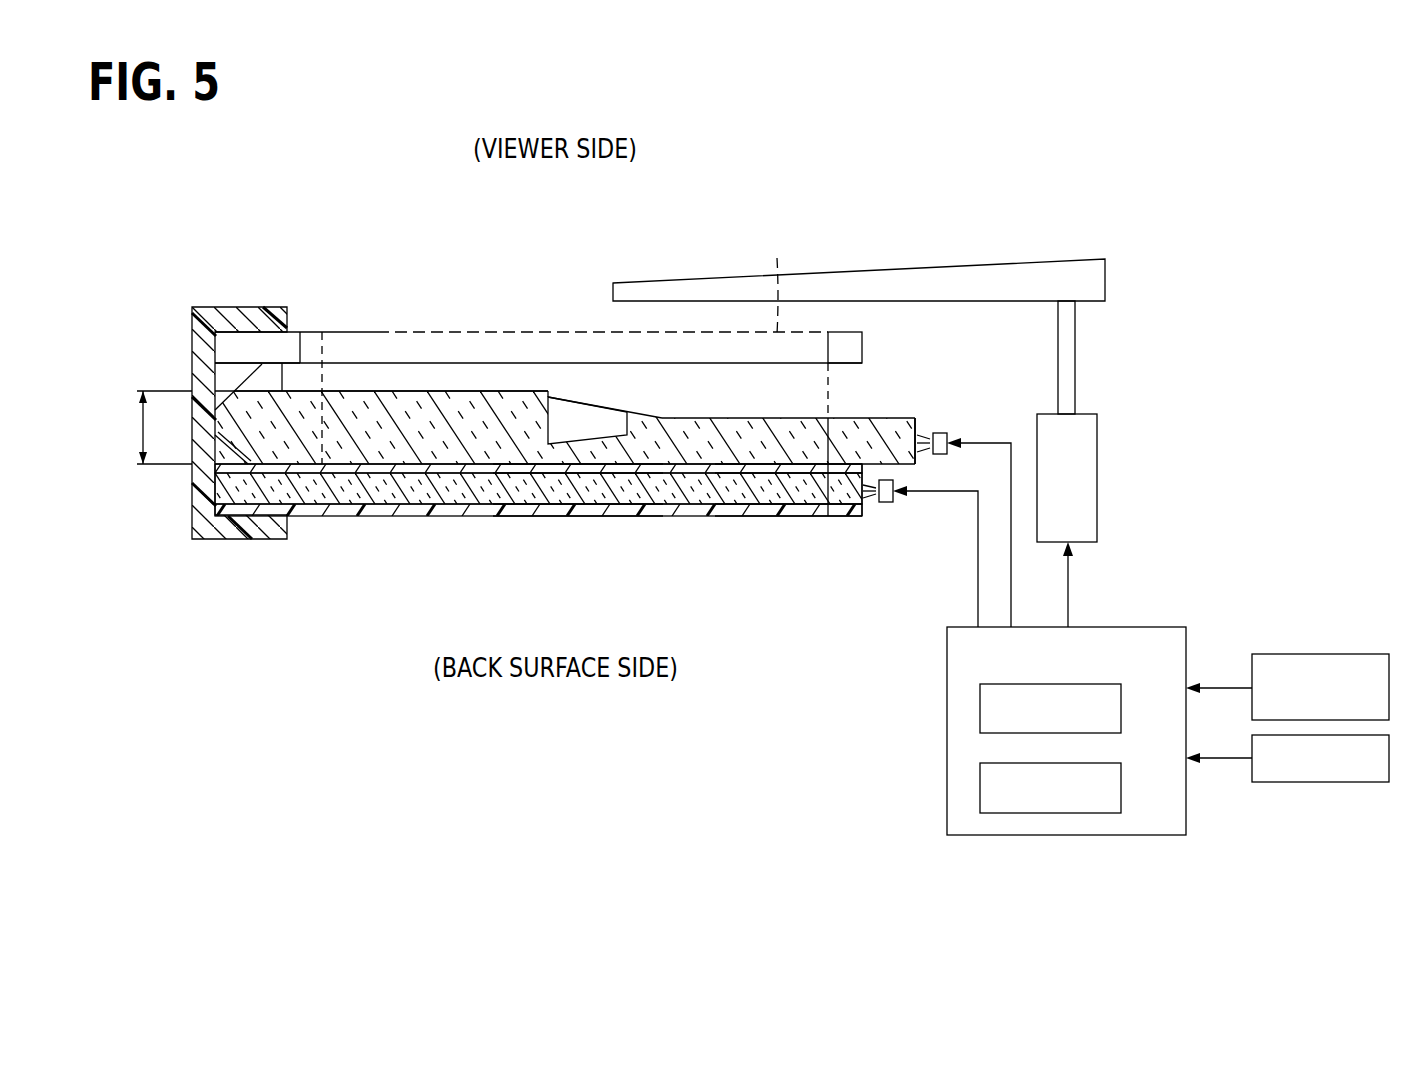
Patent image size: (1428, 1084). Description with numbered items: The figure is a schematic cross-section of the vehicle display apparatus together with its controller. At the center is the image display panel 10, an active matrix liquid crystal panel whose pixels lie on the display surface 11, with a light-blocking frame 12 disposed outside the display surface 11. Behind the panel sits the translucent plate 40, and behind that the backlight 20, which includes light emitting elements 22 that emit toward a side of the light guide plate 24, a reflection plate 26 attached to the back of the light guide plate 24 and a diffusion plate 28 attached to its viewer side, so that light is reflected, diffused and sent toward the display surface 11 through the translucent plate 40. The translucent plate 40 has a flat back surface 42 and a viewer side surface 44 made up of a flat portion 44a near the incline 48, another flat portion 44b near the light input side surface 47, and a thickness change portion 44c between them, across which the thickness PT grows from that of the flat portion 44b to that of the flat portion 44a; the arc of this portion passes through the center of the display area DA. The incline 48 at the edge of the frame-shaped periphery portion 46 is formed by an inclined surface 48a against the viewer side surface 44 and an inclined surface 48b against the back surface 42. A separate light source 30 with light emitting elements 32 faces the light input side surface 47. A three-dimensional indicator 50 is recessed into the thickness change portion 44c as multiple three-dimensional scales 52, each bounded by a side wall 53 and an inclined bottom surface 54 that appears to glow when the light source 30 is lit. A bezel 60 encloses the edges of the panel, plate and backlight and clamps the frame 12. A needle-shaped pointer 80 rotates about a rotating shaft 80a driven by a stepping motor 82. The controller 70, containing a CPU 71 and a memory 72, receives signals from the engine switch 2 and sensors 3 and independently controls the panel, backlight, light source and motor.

The engine switch 2 is at (1389, 688).
The sensors 3 is at (1389, 758).
The image display panel 10 is at (862, 350).
The display surface 11 is at (316, 330).
The frame 12 is at (262, 330).
The backlight 20 is at (808, 541).
The light emitting elements 22 is at (885, 503).
The light guide plate 24 is at (777, 505).
The reflection plate 26 is at (737, 517).
The diffusion plate 28 is at (715, 572).
The light source 30 is at (940, 431).
The light emitting elements 32 is at (975, 506).
The translucent plate 40 is at (565, 337).
The back surface 42 is at (538, 521).
The viewer side surface 44 is at (574, 337).
The flat portion 44a is at (457, 391).
The another flat portion 44b is at (692, 418).
The thickness change portion 44c is at (540, 395).
The periphery portion 46 is at (250, 364).
The light input side surface 47 is at (916, 428).
The incline 48 is at (171, 427).
The inclined surface 48a is at (233, 447).
The inclined surface 48b is at (250, 377).
The three-dimensional indicator 50 is at (578, 521).
The three-dimensional scales 52 is at (578, 521).
The side wall 53 is at (533, 425).
The bottom surface 54 is at (590, 438).
The bezel 60 is at (215, 540).
The controller 70 is at (1089, 731).
The CPU 71 is at (1121, 708).
The memory 72 is at (1121, 789).
The pointer 80 is at (1003, 258).
The rotating shaft 80a is at (1075, 350).
The stepping motor 82 is at (1097, 478).
The display area DA is at (783, 282).
The thickness PT is at (150, 427).